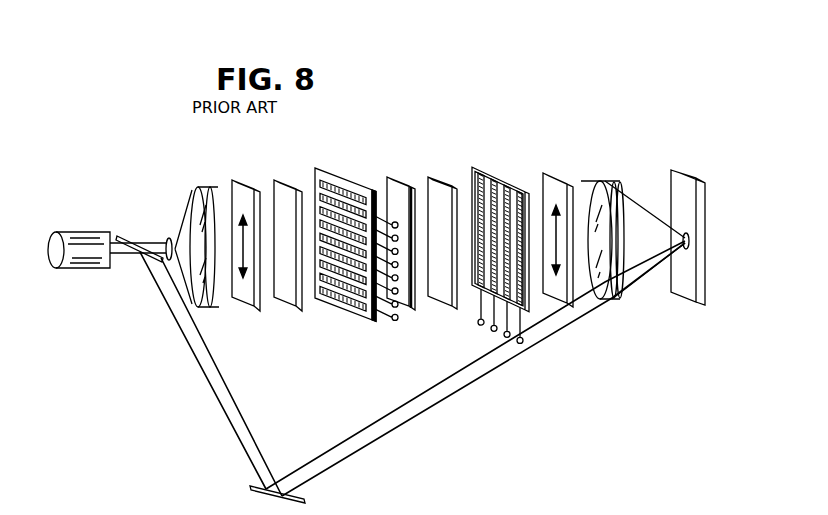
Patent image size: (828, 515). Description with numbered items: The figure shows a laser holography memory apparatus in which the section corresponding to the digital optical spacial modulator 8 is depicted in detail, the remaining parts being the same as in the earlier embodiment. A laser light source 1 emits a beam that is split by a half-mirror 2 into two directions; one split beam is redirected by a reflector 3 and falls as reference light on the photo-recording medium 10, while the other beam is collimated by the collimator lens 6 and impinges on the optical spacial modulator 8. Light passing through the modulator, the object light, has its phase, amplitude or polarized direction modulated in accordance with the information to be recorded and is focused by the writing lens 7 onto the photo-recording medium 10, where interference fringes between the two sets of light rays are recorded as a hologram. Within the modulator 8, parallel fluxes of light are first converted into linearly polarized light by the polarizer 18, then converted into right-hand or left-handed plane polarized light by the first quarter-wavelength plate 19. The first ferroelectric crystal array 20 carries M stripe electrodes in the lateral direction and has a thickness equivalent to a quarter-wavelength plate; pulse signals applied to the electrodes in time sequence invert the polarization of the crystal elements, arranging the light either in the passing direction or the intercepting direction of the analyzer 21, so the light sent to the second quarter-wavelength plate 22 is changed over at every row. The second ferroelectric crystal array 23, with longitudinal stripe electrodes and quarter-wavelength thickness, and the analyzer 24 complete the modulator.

The laser light source 1 is at (70, 268).
The half-mirror 2 is at (121, 238).
The reflector 3 is at (253, 487).
The collimator lens 6 is at (195, 184).
The writing lens 7 is at (606, 180).
The digital optical spacial modulator 8 is at (547, 150).
The photo-recording medium 10 is at (692, 166).
The polarizer 18 is at (252, 308).
The first quarter-wavelength plate 19 is at (297, 307).
The first ferroelectric crystal array 20 is at (356, 313).
The analyzer 21 is at (410, 309).
The second quarter-wavelength plate 22 is at (449, 302).
The second ferroelectric crystal array 23 is at (507, 166).
The analyzer 24 is at (561, 177).